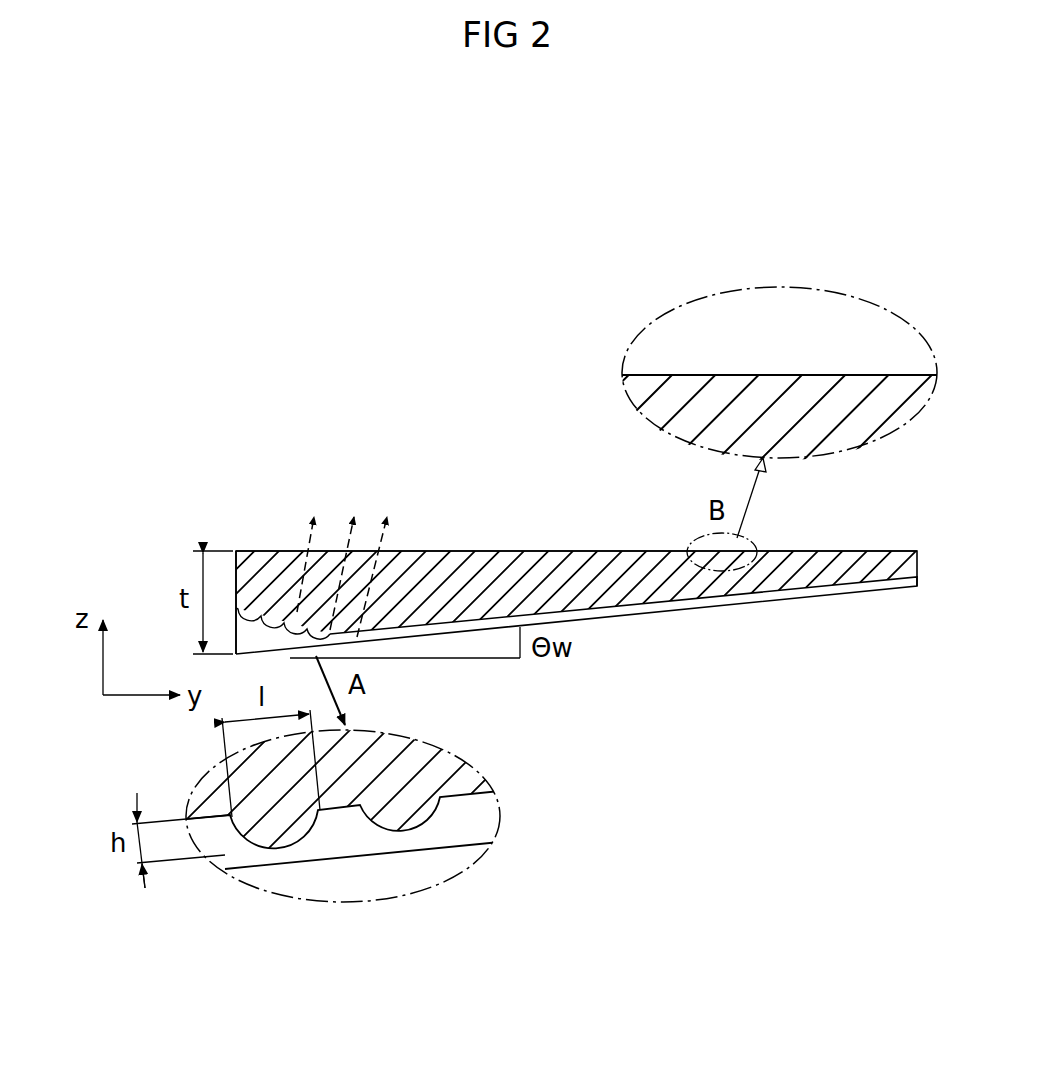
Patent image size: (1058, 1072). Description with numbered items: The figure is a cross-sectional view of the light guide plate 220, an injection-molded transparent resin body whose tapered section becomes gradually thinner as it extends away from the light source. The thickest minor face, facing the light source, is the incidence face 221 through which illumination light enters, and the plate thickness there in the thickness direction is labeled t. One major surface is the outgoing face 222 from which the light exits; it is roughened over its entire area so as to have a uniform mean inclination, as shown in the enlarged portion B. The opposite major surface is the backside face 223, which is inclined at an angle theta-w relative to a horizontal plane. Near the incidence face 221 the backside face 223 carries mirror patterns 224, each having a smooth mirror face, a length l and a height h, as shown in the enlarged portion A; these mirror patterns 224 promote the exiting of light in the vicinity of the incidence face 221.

The light guide plate 220 is at (670, 242).
The incidence face 221 is at (235, 578).
The outgoing face 222 is at (848, 552).
The backside face 223 is at (850, 592).
The mirror pattern 224 is at (300, 848).